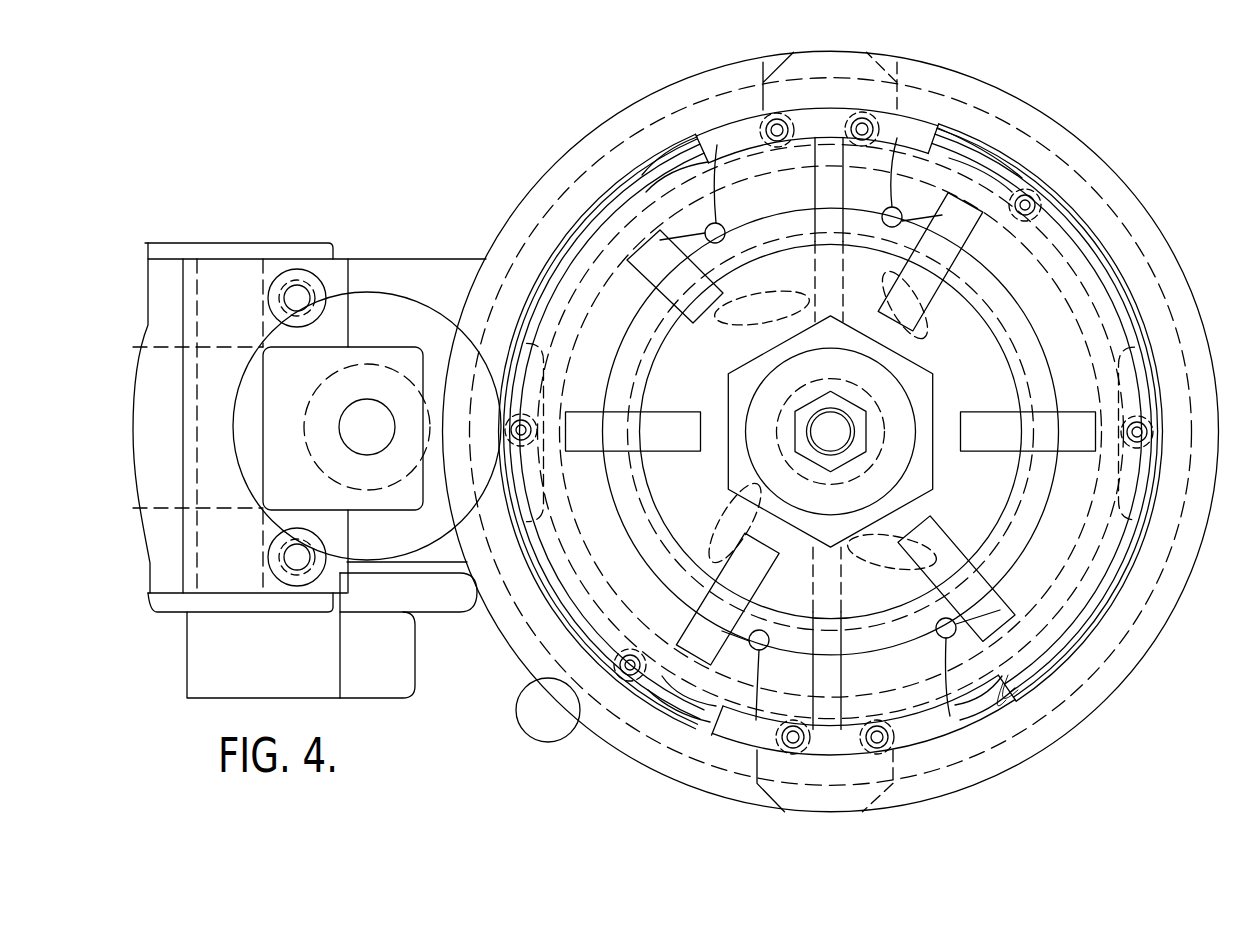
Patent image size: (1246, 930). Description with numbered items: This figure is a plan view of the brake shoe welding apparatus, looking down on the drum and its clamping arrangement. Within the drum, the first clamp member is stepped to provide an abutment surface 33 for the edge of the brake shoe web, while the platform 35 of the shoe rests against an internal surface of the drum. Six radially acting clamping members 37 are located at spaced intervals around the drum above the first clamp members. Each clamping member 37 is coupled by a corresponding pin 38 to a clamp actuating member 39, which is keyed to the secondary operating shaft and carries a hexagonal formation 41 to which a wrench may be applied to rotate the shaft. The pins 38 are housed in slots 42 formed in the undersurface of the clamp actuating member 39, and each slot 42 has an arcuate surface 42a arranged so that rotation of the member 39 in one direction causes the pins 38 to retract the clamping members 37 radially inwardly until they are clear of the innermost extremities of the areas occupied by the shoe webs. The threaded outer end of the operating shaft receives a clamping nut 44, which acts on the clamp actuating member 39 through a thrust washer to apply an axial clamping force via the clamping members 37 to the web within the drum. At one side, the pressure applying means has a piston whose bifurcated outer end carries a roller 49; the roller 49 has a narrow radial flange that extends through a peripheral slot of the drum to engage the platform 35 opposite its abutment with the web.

The abutment surface 33 is at (628, 305).
The platform 35 is at (600, 222).
The clamping member 37 is at (688, 285).
The pin 38 is at (727, 297).
The clamp actuating member 39 is at (1007, 602).
The hexagonal formation 41 is at (932, 388).
The slot 42 is at (1082, 578).
The arcuate surface 42a is at (655, 395).
The clamping nut 44 is at (837, 453).
The roller 49 is at (382, 322).